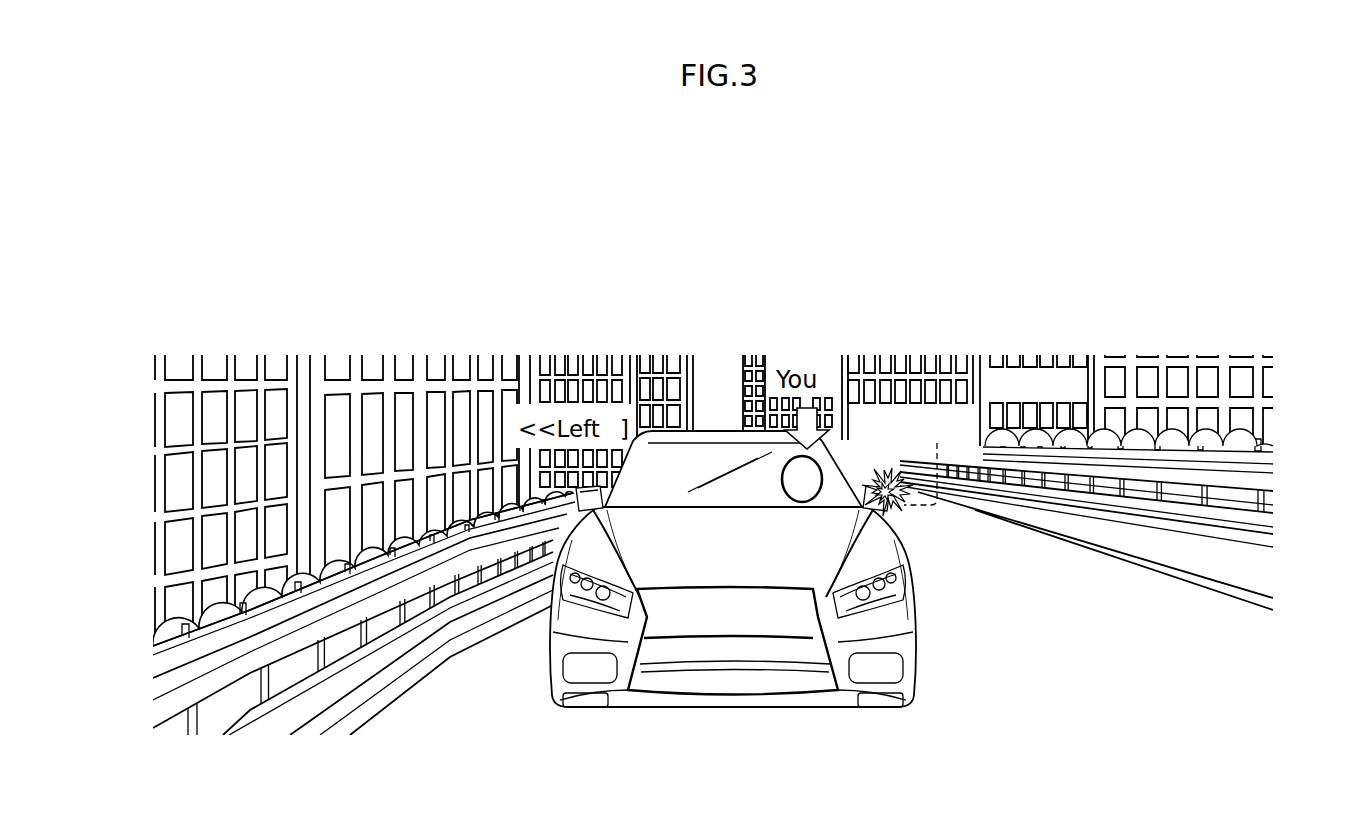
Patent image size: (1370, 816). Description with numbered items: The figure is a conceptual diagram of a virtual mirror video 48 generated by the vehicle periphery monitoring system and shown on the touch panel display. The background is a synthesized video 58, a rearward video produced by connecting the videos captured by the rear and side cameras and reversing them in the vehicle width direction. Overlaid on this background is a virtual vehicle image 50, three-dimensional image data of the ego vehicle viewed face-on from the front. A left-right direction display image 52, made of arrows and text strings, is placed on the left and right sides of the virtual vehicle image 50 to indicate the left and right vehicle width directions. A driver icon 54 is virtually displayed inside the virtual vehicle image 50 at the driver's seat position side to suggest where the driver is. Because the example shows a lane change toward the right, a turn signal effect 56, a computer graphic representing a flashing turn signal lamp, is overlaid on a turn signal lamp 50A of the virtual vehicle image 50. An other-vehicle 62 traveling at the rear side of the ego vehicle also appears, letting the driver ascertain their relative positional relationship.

The virtual mirror video 48 is at (1031, 337).
The virtual vehicle image 50 is at (893, 633).
The turn signal lamp 50A is at (537, 560).
The left-right direction display image 52 is at (902, 412).
The driver icon 54 is at (788, 490).
The turn signal effect 56 is at (923, 503).
The synthesized video 58 is at (1235, 433).
The other-vehicle 62 is at (980, 508).